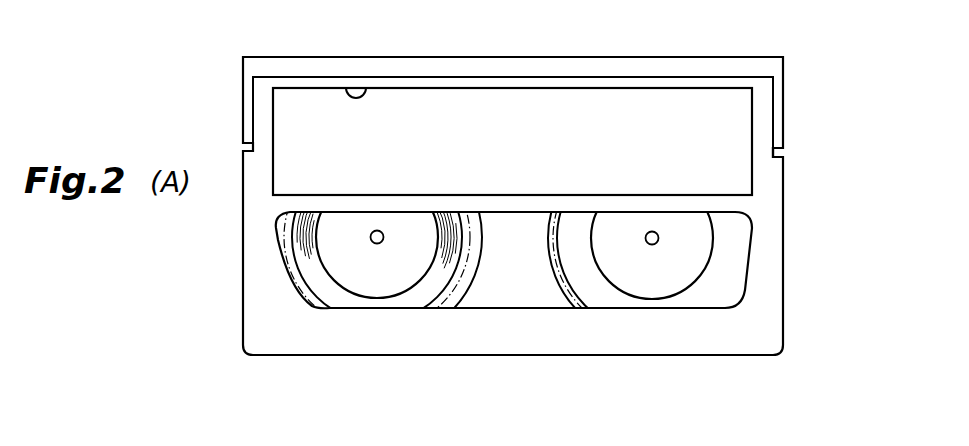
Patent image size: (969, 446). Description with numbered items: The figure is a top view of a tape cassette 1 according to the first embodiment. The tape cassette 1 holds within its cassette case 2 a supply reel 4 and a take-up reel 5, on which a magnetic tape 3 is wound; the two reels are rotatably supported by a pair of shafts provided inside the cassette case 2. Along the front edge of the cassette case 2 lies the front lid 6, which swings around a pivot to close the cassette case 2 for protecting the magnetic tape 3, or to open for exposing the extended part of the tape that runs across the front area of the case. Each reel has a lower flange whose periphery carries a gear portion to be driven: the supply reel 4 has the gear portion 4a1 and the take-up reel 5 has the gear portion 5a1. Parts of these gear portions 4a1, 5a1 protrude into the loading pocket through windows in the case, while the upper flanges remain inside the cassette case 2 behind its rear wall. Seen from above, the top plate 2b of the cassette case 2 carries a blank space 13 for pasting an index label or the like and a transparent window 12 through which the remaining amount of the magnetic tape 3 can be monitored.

The tape cassette 1 is at (243, 43).
The cassette case 2 is at (242, 170).
The top plate 2b is at (776, 168).
The magnetic tape 3 is at (355, 298).
The supply reel 4 is at (335, 255).
The gear portion 4a1 is at (472, 285).
The take-up reel 5 is at (690, 255).
The gear portion 5a1 is at (555, 288).
The front lid 6 is at (446, 66).
The transparent window 12 is at (672, 306).
The blank space 13 is at (346, 95).